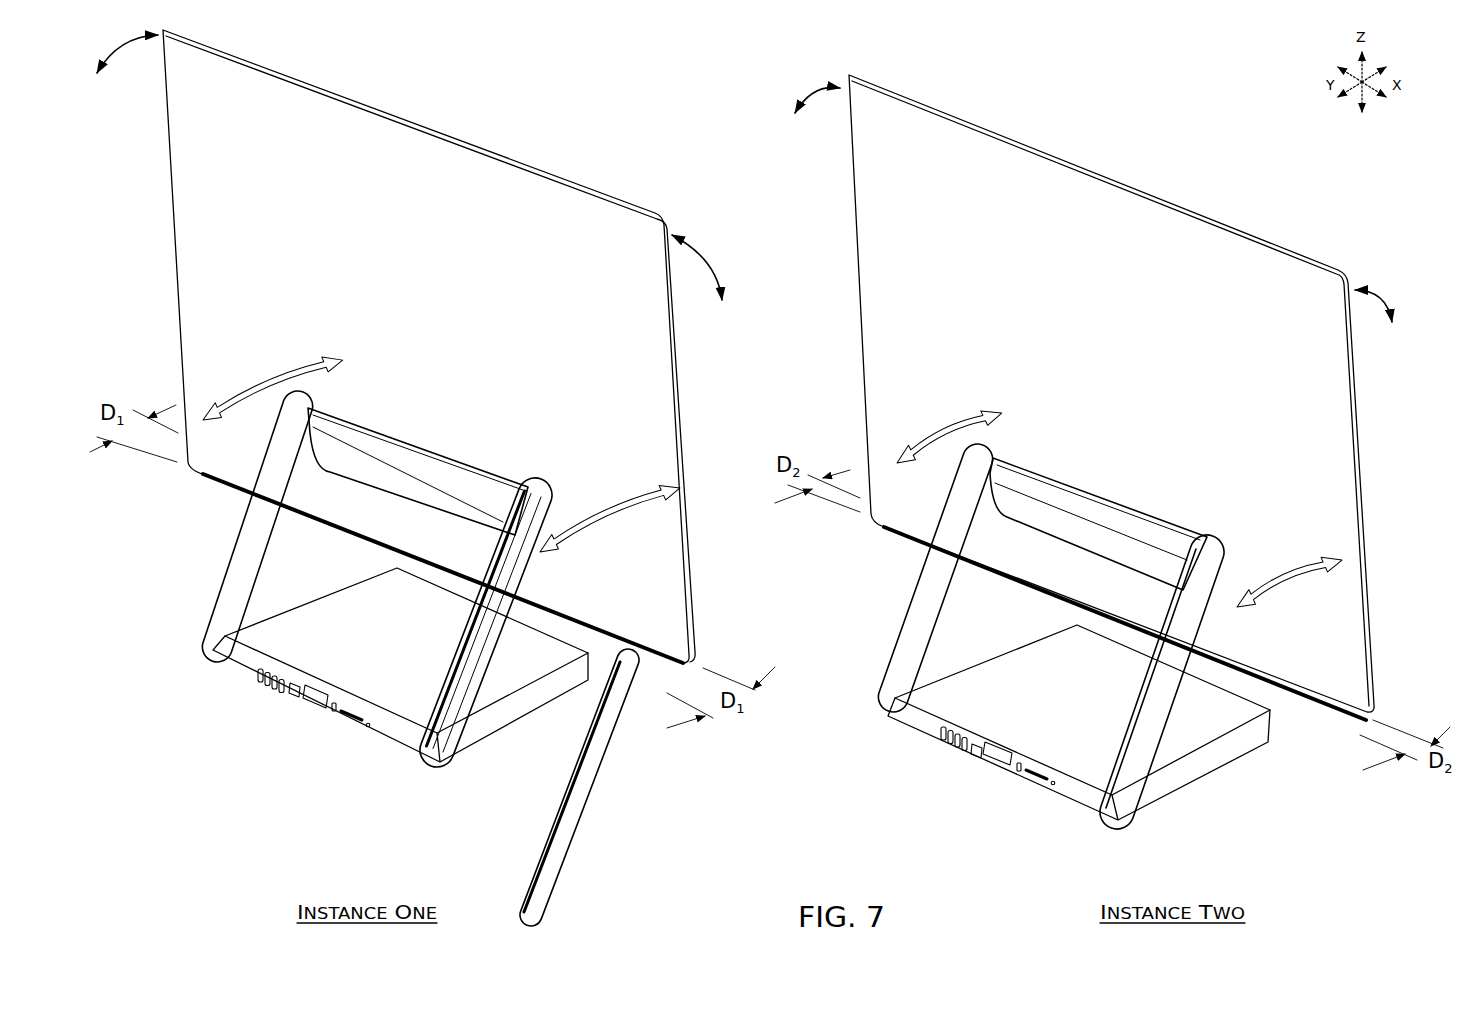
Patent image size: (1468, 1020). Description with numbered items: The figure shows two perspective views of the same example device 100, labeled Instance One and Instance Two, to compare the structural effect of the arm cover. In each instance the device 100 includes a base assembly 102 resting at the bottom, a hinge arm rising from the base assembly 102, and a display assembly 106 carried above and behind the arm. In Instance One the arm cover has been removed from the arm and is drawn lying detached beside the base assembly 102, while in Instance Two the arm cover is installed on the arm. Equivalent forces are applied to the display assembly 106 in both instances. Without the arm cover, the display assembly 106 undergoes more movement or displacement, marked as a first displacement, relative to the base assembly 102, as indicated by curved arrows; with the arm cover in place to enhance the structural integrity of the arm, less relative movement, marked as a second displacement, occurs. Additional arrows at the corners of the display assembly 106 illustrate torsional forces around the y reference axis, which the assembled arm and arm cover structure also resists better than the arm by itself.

The device 100 is at (469, 94).
The display assembly 106 is at (1262, 183).
The base assembly 102 is at (361, 736).